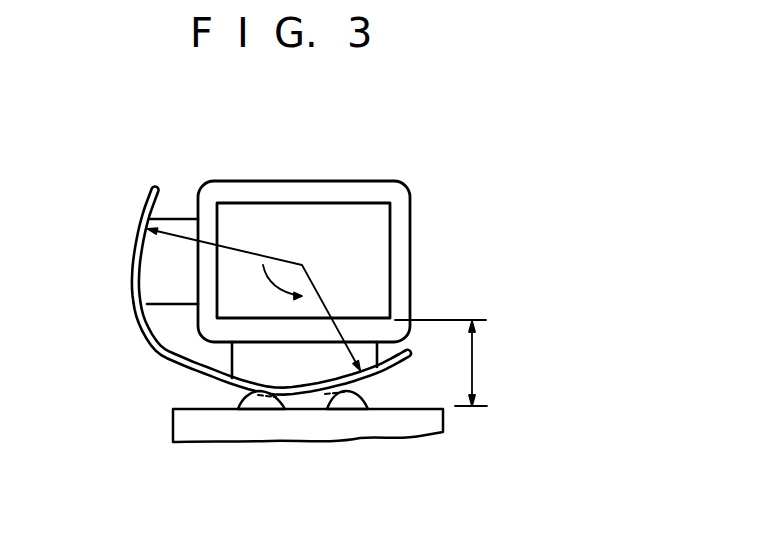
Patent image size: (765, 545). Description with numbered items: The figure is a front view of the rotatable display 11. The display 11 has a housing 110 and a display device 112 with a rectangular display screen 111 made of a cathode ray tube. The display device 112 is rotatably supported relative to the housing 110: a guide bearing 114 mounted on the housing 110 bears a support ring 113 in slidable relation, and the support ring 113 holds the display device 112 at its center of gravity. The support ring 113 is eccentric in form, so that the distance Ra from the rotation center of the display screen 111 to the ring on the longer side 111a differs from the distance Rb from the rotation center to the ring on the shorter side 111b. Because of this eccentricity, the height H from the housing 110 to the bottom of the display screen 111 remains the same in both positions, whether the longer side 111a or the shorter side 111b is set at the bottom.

The display 11 is at (512, 146).
The housing 110 is at (433, 418).
The display screen 111 is at (257, 301).
The longer side 111a is at (226, 326).
The shorter side 111b is at (216, 259).
The display device 112 is at (333, 183).
The support ring 113 is at (134, 302).
The guide bearing 114 is at (343, 402).